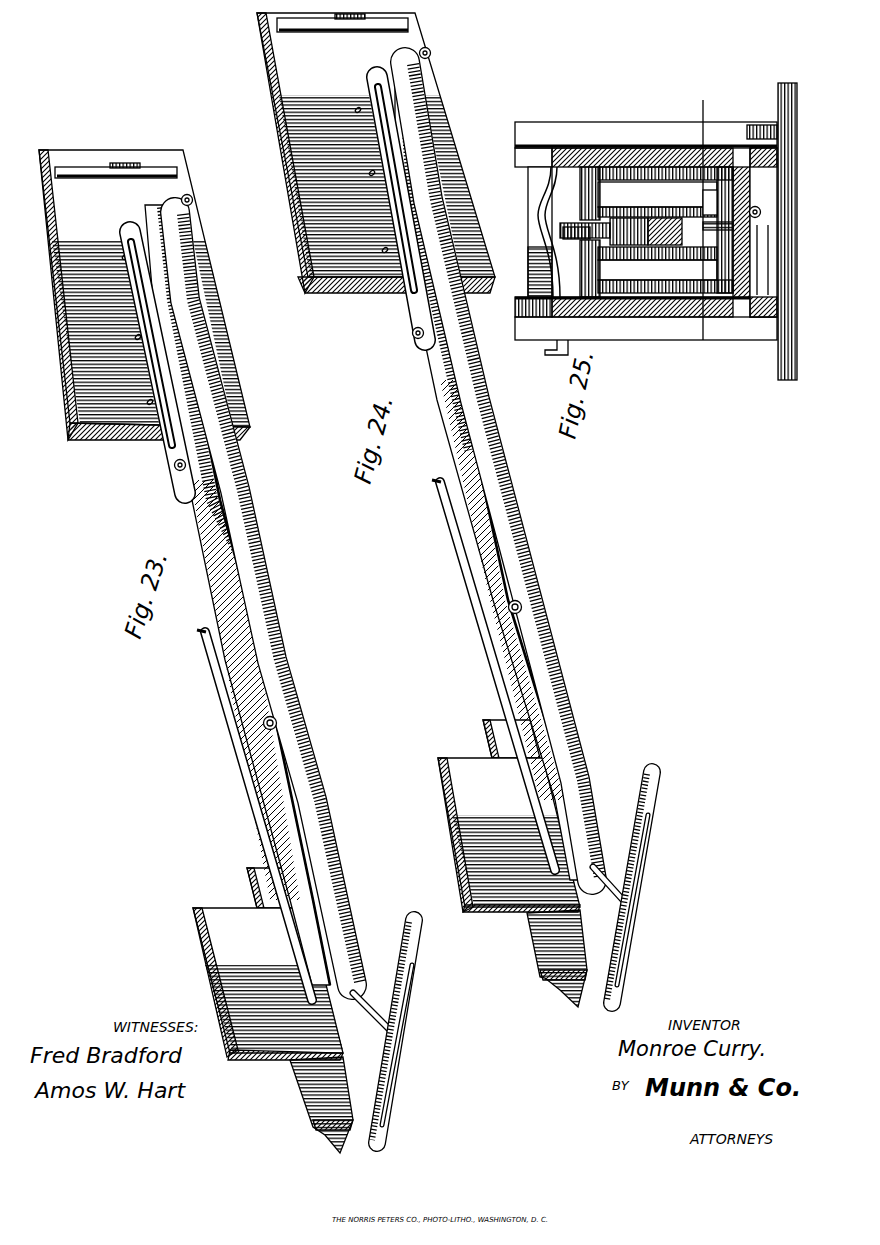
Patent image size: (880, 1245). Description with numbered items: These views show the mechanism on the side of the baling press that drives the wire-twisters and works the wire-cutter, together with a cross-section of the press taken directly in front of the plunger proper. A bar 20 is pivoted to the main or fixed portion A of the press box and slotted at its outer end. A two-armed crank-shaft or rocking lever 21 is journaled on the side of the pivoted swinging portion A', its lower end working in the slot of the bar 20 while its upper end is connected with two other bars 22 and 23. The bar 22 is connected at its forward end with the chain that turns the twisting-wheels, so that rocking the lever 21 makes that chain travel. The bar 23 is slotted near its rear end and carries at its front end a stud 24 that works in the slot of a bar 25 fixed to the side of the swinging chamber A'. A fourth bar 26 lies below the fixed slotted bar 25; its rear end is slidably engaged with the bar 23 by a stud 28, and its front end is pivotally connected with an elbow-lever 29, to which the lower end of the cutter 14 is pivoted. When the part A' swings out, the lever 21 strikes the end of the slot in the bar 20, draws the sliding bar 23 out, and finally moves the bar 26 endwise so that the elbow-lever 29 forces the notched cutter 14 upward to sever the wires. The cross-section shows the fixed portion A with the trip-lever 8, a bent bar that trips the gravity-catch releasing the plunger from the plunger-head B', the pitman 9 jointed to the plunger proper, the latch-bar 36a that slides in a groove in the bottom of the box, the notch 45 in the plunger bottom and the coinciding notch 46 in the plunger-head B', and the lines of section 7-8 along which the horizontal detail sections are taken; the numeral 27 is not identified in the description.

In FIG. 23, the cutter 14 is at (75, 167).
In FIG. 24, the cutter 14 is at (312, 32).
In FIG. 23, the bar 20 is at (410, 1040).
In FIG. 24, the bar 20 is at (645, 885).
In FIG. 23, the two-armed crank-shaft or rocking lever 21 is at (335, 975).
In FIG. 24, the two-armed crank-shaft or rocking lever 21 is at (605, 885).
In FIG. 23, the bar 22 is at (252, 785).
In FIG. 24, the bar 22 is at (462, 530).
In FIG. 23, the bar 23 is at (212, 548).
In FIG. 24, the bar 23 is at (445, 395).
In FIG. 23, the stud 24 is at (175, 466).
In FIG. 24, the stud 24 is at (414, 338).
In FIG. 23, the bar 25 is at (215, 345).
In FIG. 24, the bar 25 is at (375, 78).
In FIG. 23, the bar 26 is at (250, 512).
In FIG. 24, the bar 26 is at (435, 150).
In FIG. 25, the pin 27 is at (755, 260).
In FIG. 23, the stud 28 is at (277, 724).
In FIG. 24, the stud 28 is at (522, 608).
In FIG. 25, the stud 28 is at (757, 125).
In FIG. 23, the elbow-lever 29 is at (200, 183).
In FIG. 24, the elbow-lever 29 is at (428, 40).
In FIG. 25, the elbow-lever 29 is at (760, 198).
In FIG. 25, the latch-bar 36a is at (758, 260).
In FIG. 25, the notch 45 is at (707, 202).
In FIG. 25, the notch 46 is at (716, 232).
In FIG. 25, the trip-lever 8 is at (540, 240).
In FIG. 25, the pitman 9 is at (612, 170).
In FIG. 25, the lines of section 7-8 is at (696, 223).
In FIG. 25, the main or fixed portion of the press box A is at (644, 230).
In FIG. 23, the pivoted and swinging portion of the press box A' is at (196, 651).
In FIG. 24, the pivoted and swinging portion of the press box A' is at (422, 510).
In FIG. 25, the plunger-head B' is at (680, 221).